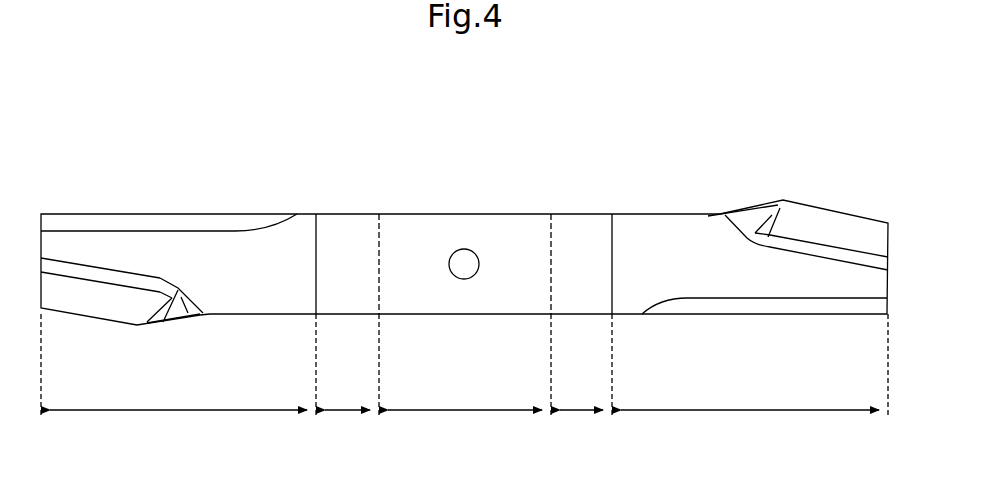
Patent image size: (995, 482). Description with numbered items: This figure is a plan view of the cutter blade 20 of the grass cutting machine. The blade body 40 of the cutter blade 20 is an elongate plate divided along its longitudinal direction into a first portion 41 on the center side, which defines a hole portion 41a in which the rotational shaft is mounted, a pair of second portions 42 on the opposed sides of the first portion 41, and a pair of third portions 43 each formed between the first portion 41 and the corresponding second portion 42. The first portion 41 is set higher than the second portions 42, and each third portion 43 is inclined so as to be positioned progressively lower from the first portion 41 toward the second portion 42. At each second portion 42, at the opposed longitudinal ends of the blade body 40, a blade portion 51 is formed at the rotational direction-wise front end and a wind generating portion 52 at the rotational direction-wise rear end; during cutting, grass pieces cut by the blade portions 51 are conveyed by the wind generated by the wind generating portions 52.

The cutter blade 20 is at (272, 157).
The blade body 40 is at (424, 213).
The first portion 41 is at (465, 395).
The hole portion 41a is at (464, 257).
The second portion 42 is at (464, 395).
The third portion 43 is at (464, 395).
The blade portion 51 is at (182, 212).
The wind generating portion 52 is at (80, 296).